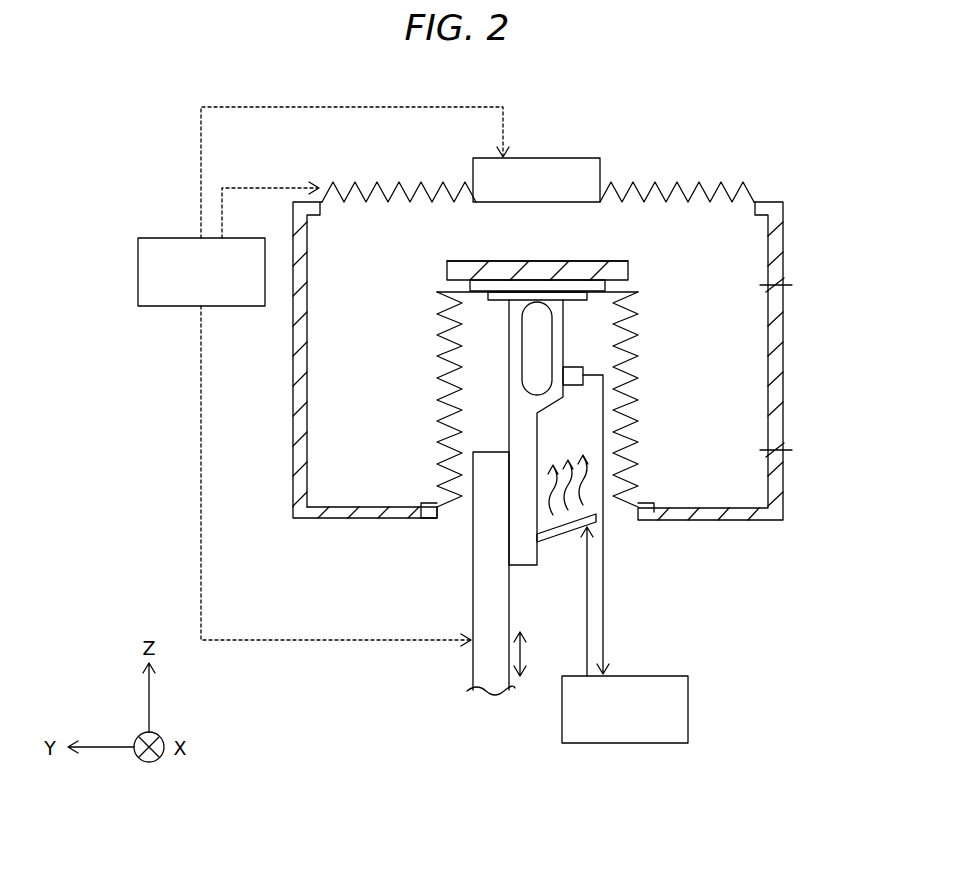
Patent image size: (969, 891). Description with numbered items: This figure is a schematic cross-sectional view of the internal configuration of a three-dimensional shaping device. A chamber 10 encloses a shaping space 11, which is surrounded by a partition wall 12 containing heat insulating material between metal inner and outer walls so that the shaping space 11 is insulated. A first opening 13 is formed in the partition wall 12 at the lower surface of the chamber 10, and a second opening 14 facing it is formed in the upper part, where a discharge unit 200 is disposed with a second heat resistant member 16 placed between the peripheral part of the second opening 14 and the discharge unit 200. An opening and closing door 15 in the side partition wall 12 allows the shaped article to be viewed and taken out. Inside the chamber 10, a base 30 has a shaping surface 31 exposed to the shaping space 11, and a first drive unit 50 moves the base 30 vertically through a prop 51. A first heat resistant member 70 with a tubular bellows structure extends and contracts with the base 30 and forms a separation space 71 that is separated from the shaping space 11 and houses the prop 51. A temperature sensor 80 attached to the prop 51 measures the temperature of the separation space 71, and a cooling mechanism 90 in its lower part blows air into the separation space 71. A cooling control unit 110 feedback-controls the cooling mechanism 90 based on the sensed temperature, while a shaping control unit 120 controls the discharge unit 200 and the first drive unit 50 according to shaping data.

The chamber 10 is at (781, 163).
The shaping space 11 is at (683, 378).
The partition wall 12 is at (293, 420).
The first opening 13 is at (437, 518).
The second opening 14 is at (320, 206).
The opening and closing door 15 is at (784, 405).
The second heat resistant member 16 is at (687, 187).
The base 30 is at (628, 270).
The shaping surface 31 is at (596, 260).
The first drive unit 50 is at (473, 605).
The prop 51 is at (508, 373).
The first heat resistant member 70 is at (440, 362).
The separation space 71 is at (576, 348).
The temperature sensor 80 is at (571, 388).
The cooling mechanism 90 is at (548, 543).
The cooling control unit 110 is at (660, 676).
The shaping control unit 120 is at (160, 238).
The discharge unit 200 is at (583, 158).